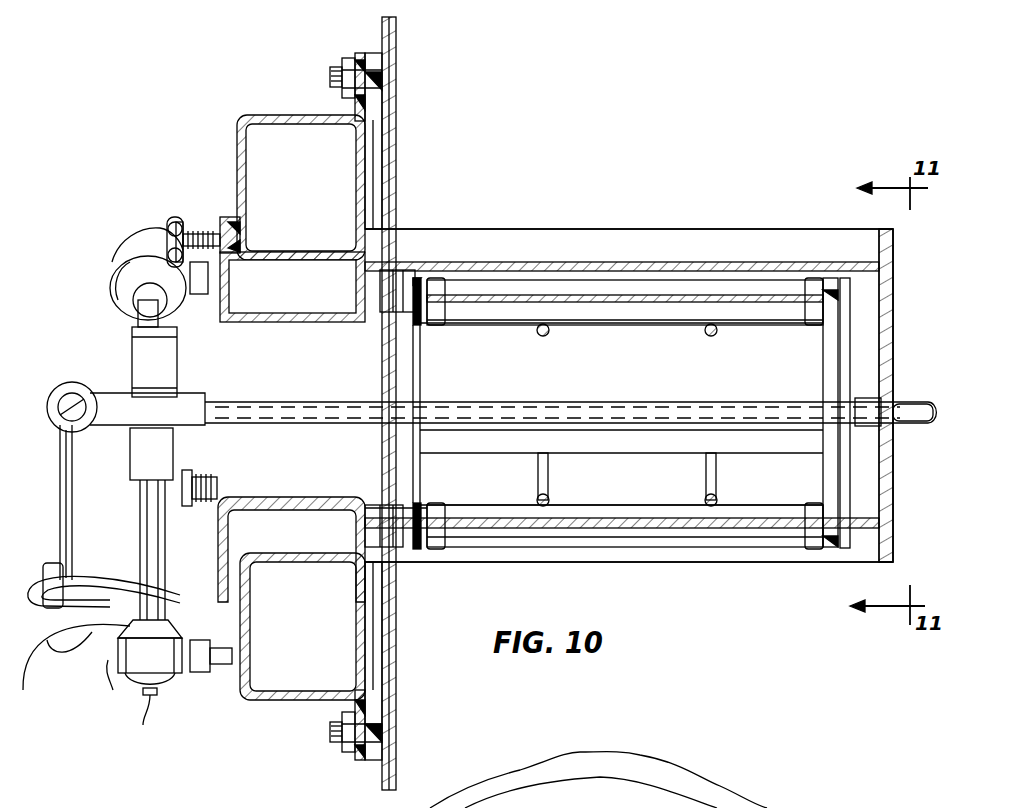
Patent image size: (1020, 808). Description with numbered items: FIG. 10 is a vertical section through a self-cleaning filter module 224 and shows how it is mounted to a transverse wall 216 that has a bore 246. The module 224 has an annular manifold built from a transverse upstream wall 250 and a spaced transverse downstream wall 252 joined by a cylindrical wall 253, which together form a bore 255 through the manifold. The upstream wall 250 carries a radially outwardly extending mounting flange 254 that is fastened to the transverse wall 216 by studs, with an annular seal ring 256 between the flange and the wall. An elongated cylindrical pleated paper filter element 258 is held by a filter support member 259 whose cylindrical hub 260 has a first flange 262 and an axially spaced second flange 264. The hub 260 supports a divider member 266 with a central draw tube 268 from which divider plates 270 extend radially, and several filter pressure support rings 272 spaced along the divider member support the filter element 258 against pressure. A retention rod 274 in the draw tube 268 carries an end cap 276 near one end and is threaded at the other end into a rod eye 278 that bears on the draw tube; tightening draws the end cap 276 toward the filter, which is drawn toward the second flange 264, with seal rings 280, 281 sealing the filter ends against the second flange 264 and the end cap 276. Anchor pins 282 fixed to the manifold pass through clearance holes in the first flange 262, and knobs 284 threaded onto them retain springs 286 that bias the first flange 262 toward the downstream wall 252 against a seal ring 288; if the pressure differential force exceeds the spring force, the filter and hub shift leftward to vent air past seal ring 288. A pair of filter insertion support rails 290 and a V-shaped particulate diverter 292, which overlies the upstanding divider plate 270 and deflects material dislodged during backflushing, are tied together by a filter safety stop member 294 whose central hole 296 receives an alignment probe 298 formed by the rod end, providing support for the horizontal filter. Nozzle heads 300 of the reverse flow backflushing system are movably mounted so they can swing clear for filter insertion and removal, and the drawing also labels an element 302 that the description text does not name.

The transverse wall 216 is at (396, 48).
The module 224 is at (625, 203).
The bore 246 is at (391, 158).
The transverse upstream wall 250 is at (370, 185).
The transverse downstream wall 252 is at (237, 133).
The cylindrical wall 253 is at (383, 263).
The mounting flange 254 is at (360, 54).
The bore 255 is at (318, 304).
The annular seal ring 256 is at (376, 140).
The filter element 258 is at (660, 262).
The filter support member 259 is at (308, 518).
The cylindrical hub 260 is at (343, 507).
The first flange 262 is at (217, 540).
The second flange 264 is at (413, 525).
The divider member 266 is at (593, 322).
The draw tube 268 is at (525, 427).
The divider plates 270 is at (639, 377).
The filter pressure support rings 272 is at (710, 507).
The retention rod 274 is at (436, 402).
The end cap 276 is at (846, 278).
The rod eye 278 is at (70, 383).
The seal ring 280 is at (434, 290).
The seal ring 281 is at (835, 288).
The anchor pins 282 is at (208, 233).
The knobs 284 is at (128, 240).
The springs 286 is at (178, 224).
The seal ring 288 is at (233, 216).
The filter insertion support rails 290 is at (757, 563).
The particulate diverter 292 is at (536, 229).
The filter safety stop member 294 is at (893, 300).
The central hole 296 is at (893, 425).
The alignment probe 298 is at (912, 406).
The nozzle heads 300 is at (130, 455).
The hose 302 is at (26, 660).